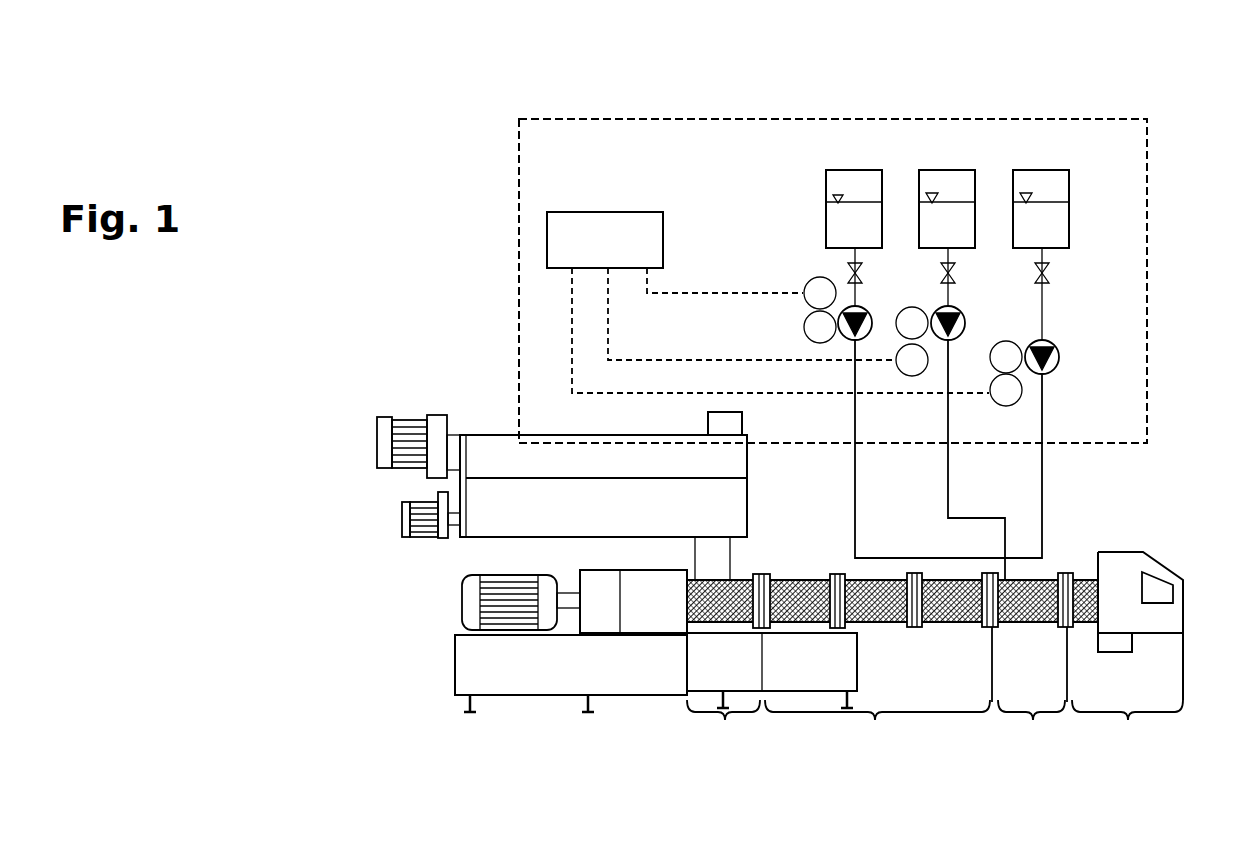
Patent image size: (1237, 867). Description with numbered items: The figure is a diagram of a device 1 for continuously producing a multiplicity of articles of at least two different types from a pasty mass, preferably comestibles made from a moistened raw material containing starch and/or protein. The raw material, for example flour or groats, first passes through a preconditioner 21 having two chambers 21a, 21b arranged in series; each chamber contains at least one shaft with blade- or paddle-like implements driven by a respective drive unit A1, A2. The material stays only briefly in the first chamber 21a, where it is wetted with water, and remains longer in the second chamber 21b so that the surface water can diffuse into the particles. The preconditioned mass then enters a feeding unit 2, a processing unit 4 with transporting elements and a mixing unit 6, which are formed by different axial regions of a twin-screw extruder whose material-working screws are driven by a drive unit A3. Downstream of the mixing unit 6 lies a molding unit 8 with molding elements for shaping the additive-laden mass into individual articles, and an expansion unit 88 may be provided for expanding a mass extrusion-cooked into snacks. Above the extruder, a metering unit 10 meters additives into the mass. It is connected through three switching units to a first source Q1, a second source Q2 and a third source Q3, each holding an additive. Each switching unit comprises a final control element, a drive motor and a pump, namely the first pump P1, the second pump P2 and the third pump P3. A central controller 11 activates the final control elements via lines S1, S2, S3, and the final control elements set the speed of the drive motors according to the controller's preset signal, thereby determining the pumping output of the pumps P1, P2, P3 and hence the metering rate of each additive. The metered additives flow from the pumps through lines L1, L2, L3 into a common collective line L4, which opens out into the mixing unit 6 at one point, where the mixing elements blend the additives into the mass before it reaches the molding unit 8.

The device 1 is at (548, 95).
The metering unit 10 is at (923, 119).
The central controller 11 is at (592, 212).
The first source Q1 is at (840, 170).
The second source Q2 is at (933, 170).
The third source Q3 is at (1045, 170).
The first pump P1 is at (860, 310).
The second pump P2 is at (955, 307).
The third pump P3 is at (1050, 342).
The first line S1 is at (695, 292).
The second line S2 is at (635, 358).
The third line S3 is at (688, 390).
The first line L1 is at (848, 478).
The second line L2 is at (945, 478).
The third line L3 is at (1045, 477).
The collective line L4 is at (1010, 568).
The preconditioner 21 is at (569, 456).
The first chamber 21a is at (547, 465).
The second chamber 21b is at (615, 497).
The drive unit A1 is at (412, 420).
The drive unit A2 is at (412, 512).
The drive unit A3 is at (470, 612).
The feeding unit 2 is at (725, 730).
The processing unit 4 is at (892, 673).
The mixing unit 6 is at (1033, 728).
The molding unit 8 is at (1149, 634).
The expansion unit 88 is at (1125, 565).